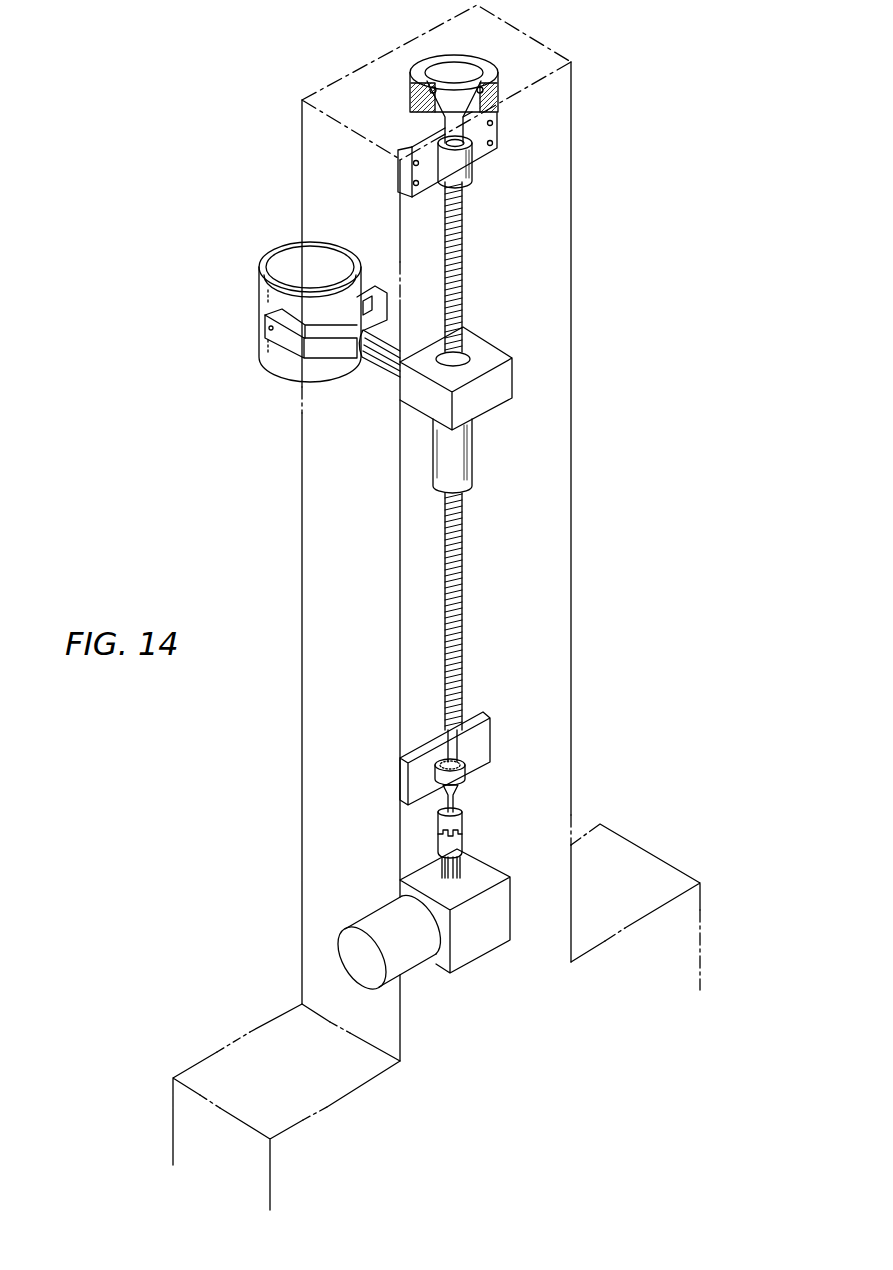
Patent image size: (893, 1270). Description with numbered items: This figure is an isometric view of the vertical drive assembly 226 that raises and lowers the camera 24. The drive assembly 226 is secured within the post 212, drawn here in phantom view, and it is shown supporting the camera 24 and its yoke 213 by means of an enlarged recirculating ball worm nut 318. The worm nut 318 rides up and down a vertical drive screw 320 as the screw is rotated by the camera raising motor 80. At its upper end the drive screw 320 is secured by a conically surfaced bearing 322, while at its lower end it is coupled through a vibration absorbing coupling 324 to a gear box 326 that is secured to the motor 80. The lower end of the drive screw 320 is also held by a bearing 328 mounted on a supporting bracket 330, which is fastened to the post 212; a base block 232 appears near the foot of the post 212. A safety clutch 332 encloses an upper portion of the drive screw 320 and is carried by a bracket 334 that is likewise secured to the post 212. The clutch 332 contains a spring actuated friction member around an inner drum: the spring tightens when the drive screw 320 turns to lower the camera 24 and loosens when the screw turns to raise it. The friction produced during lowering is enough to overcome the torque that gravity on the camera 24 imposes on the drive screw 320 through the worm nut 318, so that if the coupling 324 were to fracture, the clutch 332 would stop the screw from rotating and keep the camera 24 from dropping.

The post 212 is at (572, 125).
The base block 232 is at (678, 868).
The conically surfaced bearing 322 is at (506, 50).
The bracket 334 is at (480, 152).
The safety clutch 332 is at (470, 180).
The drive screw 320 is at (466, 550).
The recirculating ball worm nut 318 is at (480, 347).
The camera 24 is at (287, 260).
The yoke 213 is at (282, 334).
The vertical drive assembly 226 is at (190, 441).
The supporting bracket 330 is at (410, 797).
The bearing 328 is at (460, 776).
The vibration absorbing coupling 324 is at (468, 827).
The gear box 326 is at (512, 905).
The camera raising motor 80 is at (363, 970).